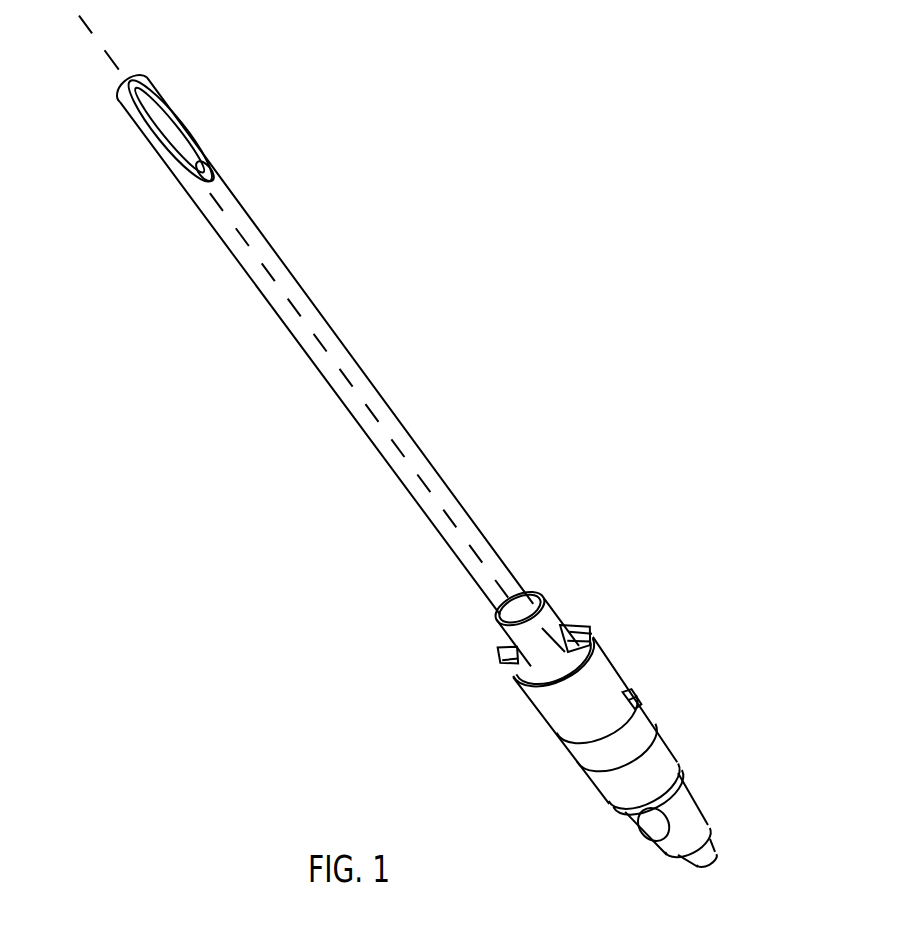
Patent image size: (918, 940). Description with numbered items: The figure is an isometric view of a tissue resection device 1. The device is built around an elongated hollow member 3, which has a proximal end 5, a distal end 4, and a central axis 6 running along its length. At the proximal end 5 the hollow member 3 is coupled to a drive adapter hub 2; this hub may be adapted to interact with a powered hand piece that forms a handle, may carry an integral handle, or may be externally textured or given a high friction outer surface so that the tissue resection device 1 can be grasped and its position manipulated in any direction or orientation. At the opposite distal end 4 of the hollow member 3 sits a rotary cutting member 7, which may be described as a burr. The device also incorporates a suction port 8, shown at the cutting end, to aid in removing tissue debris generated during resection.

The tissue resection device 1 is at (508, 272).
The drive adapter hub 2 is at (700, 656).
The hollow member 3 is at (312, 392).
The distal end 4 is at (89, 229).
The proximal end 5 is at (421, 650).
The central axis 6 is at (127, 46).
The rotary cutting member 7 is at (211, 113).
The suction port 8 is at (212, 165).